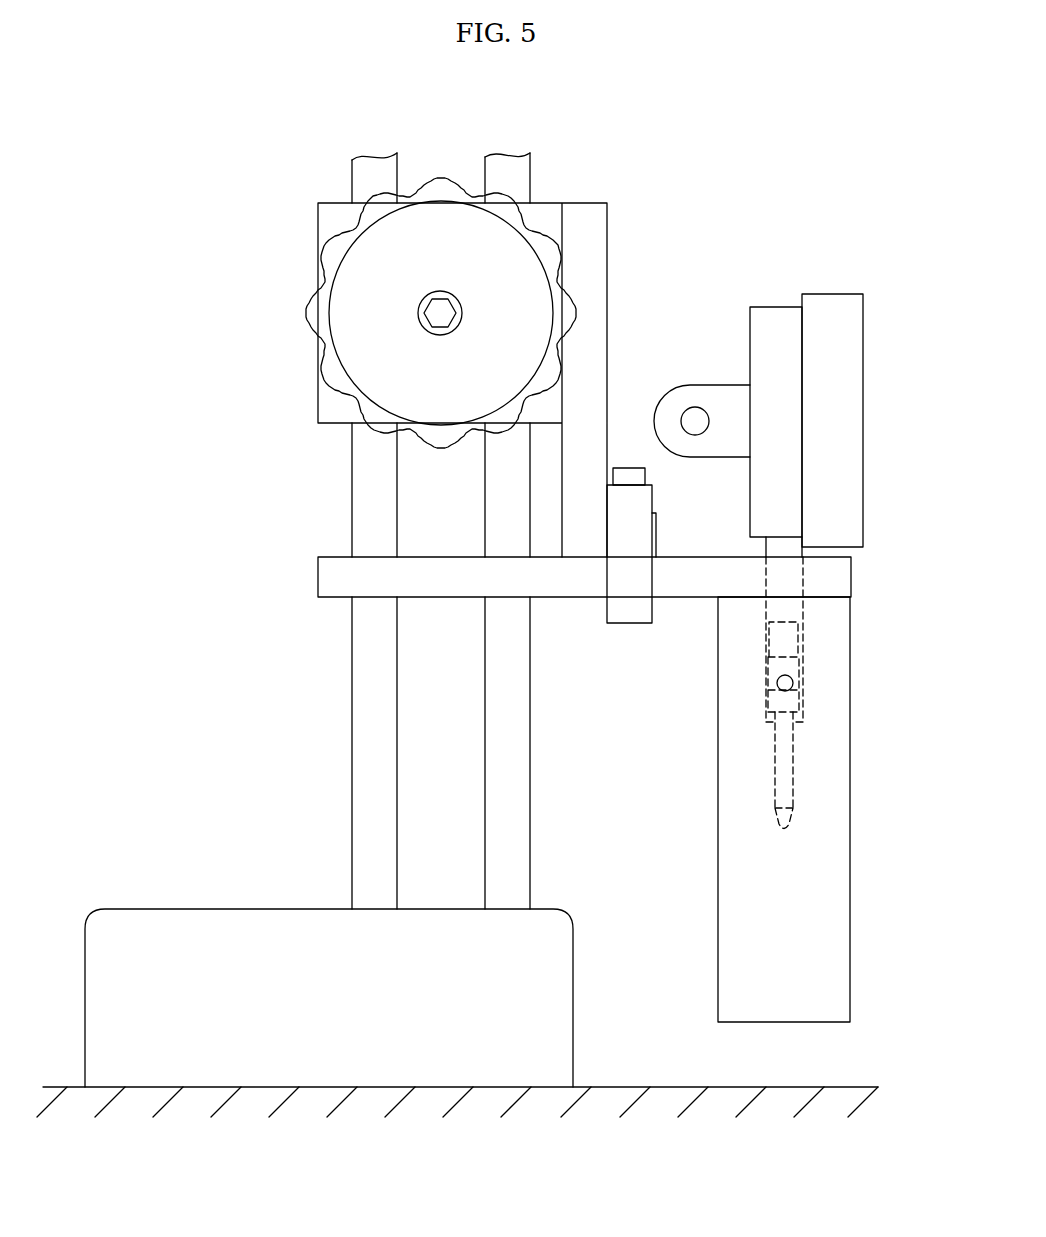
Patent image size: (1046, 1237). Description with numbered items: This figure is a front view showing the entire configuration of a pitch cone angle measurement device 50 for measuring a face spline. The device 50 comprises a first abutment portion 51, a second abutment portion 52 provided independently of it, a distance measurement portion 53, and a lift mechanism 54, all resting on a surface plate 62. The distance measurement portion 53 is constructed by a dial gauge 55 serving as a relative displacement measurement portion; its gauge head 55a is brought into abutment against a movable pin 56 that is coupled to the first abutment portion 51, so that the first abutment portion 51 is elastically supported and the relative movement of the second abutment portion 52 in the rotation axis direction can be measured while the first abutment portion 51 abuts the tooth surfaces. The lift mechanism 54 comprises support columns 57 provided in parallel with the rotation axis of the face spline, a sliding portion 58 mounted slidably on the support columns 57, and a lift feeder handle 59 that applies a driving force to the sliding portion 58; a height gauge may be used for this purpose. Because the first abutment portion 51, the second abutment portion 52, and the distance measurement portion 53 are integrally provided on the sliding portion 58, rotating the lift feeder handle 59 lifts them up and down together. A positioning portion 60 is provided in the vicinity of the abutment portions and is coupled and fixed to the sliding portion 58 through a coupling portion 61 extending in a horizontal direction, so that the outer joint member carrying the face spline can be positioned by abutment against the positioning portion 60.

The pitch cone angle measurement device 50 is at (468, 612).
The first abutment portion 51 is at (867, 824).
The second abutment portion 52 is at (790, 818).
The distance measurement portion 53 is at (806, 516).
The lift mechanism 54 is at (296, 617).
The dial gauge 55 is at (846, 377).
The gauge head 55a is at (790, 668).
The movable pin 56 is at (785, 760).
The support columns 57 is at (367, 733).
The sliding portion 58 is at (546, 212).
The lift feeder handle 59 is at (370, 267).
The positioning portion 60 is at (817, 925).
The coupling portion 61 is at (568, 583).
The surface plate 62 is at (617, 1100).